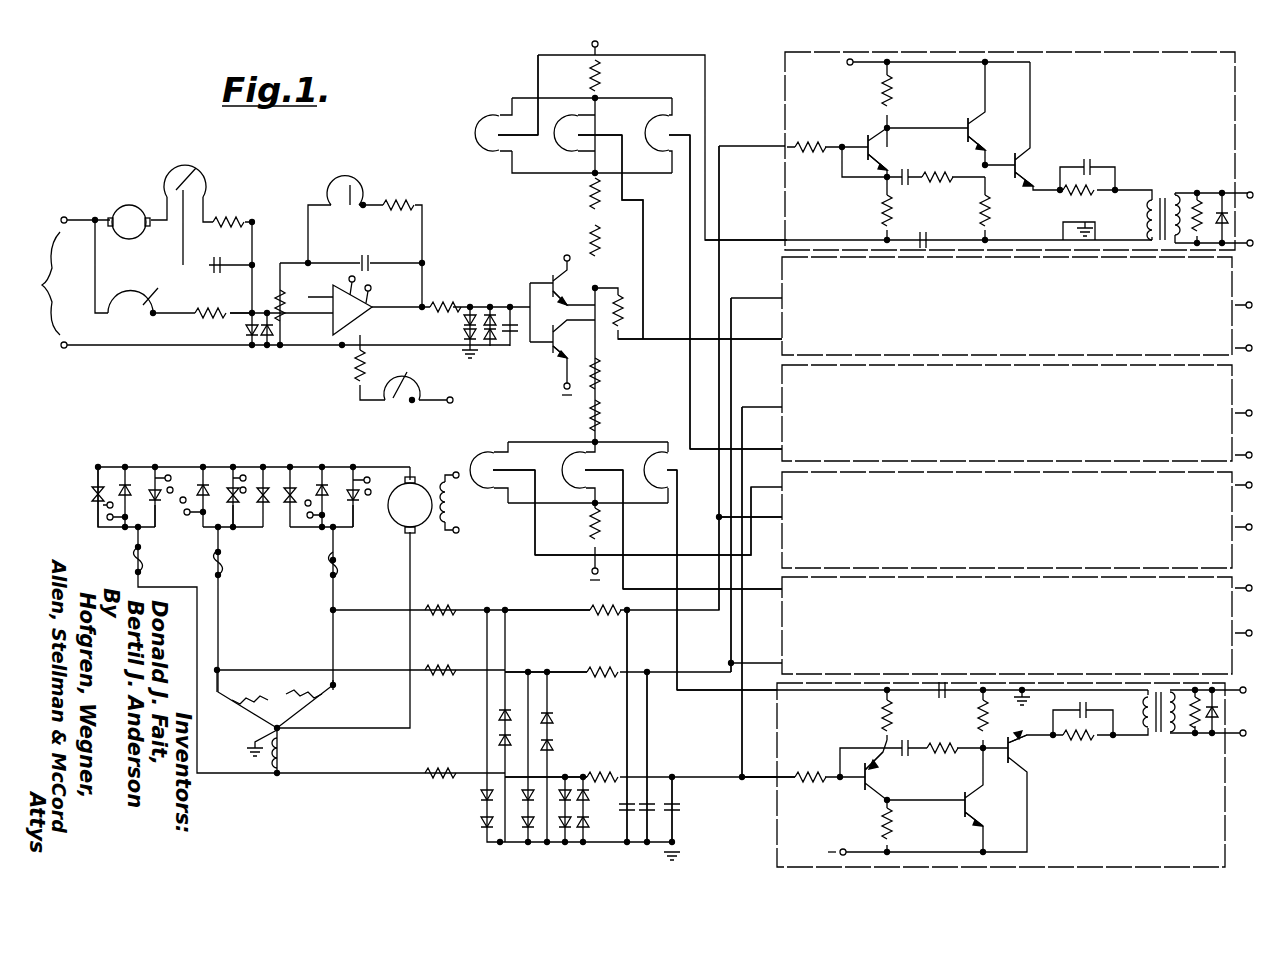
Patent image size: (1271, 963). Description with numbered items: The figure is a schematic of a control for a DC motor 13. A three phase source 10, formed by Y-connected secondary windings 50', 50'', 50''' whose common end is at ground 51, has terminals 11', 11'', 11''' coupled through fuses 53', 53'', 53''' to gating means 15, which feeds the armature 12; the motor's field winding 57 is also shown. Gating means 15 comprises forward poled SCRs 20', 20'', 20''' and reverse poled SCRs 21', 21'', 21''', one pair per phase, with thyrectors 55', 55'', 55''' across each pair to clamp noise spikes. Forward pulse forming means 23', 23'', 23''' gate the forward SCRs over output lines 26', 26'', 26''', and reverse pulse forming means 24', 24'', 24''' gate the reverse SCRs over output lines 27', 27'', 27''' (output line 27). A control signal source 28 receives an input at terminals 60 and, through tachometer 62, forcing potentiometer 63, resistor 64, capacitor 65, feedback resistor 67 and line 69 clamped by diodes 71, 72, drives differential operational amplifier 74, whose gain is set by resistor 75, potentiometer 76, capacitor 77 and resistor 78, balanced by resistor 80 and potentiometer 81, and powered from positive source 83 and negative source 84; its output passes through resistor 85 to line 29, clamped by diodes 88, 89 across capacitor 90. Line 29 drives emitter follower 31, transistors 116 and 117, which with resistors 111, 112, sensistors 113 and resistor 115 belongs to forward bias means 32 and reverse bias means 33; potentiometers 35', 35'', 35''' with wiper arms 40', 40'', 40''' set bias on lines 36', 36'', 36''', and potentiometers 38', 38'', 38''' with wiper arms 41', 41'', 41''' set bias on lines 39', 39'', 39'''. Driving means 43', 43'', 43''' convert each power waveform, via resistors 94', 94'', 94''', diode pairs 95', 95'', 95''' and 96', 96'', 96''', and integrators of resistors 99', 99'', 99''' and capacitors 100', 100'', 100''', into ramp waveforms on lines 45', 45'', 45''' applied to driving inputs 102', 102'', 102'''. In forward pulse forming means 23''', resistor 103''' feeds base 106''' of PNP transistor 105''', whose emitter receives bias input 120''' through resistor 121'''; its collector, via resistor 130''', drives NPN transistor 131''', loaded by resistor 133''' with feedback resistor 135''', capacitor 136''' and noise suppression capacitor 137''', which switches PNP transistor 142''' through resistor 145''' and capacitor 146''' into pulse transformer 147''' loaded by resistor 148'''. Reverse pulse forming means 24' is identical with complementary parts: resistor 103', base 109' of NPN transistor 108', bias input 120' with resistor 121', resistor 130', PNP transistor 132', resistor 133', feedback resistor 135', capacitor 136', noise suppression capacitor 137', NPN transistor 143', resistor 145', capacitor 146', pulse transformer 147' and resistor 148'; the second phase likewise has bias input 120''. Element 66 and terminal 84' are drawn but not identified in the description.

The motor 10 is at (281, 694).
The motor winding terminal 11' is at (353, 689).
The motor winding terminal 11'' is at (247, 666).
The motor winding terminal 11''' is at (289, 789).
The pilot motor 12 is at (419, 514).
The pilot motor circuit 13 is at (431, 462).
The switching circuit 15 is at (251, 428).
The diode 20' is at (329, 471).
The diode 20'' is at (198, 459).
The diode 20''' is at (117, 467).
The diode 21' is at (362, 528).
The diode 21'' is at (247, 530).
The diode 21''' is at (163, 520).
The control circuit 23' is at (1137, 525).
The control circuit 23'' is at (1113, 632).
The control circuit 23''' is at (1122, 810).
The control circuit 24' is at (1140, 110).
The control circuit 24'' is at (1140, 309).
The control circuit 24''' is at (1137, 410).
The contacts 26' is at (765, 519).
The contacts 26'' is at (712, 566).
The contacts 26''' is at (651, 631).
The output terminals 27 is at (1254, 219).
The contacts 27' is at (366, 473).
The contacts 27'' is at (738, 402).
The contacts 27''' is at (698, 455).
The speed control circuit 28 is at (290, 186).
The junction 29 is at (490, 305).
The transistor pair 31 is at (551, 326).
The relay group 32 is at (577, 556).
The relay group 33 is at (651, 81).
The relay coil 35' is at (483, 456).
The relay coil 35'' is at (562, 456).
The relay coil 35''' is at (656, 454).
The relay contact lead 36' is at (512, 512).
The relay contact lead 36'' is at (645, 529).
The relay contact lead 36''' is at (657, 580).
The relay coil 38' is at (482, 123).
The relay coil 38'' is at (564, 125).
The relay coil 38''' is at (667, 116).
The relay contact lead 39' is at (518, 95).
The relay contact lead 39'' is at (623, 220).
The relay contact lead 39''' is at (667, 292).
The relay contact arm 40' is at (490, 460).
The relay contact arm 40'' is at (576, 463).
The relay contact arm 40''' is at (643, 463).
The relay contact arm 41' is at (491, 143).
The relay contact arm 41'' is at (574, 151).
The relay contact arm 41''' is at (682, 129).
The conductor 43' is at (547, 600).
The conductor 43'' is at (546, 662).
The conductor 43''' is at (546, 769).
The conductor 45' is at (643, 726).
The conductor 45'' is at (649, 746).
The conductor 45''' is at (691, 799).
The motor winding 50' is at (316, 718).
The motor winding 50'' is at (235, 718).
The motor winding 50''' is at (303, 753).
The ground 51 is at (462, 353).
The switch 53' is at (310, 570).
The switch 53'' is at (236, 568).
The switch 53''' is at (158, 565).
The bidirectional diode 55' is at (293, 476).
The bidirectional diode 55'' is at (274, 466).
The bidirectional diode 55''' is at (74, 490).
The pickup coil 57 is at (450, 508).
The input terminals 60 is at (51, 282).
The motor 62 is at (126, 206).
The inductor 63 is at (182, 165).
The resistor 64 is at (228, 213).
The capacitor 65 is at (215, 258).
The inductor 66 is at (124, 292).
The resistor 67 is at (210, 304).
The conductor 69 is at (240, 322).
The diode 71 is at (248, 338).
The diode 72 is at (267, 345).
The amplifier 74 is at (352, 310).
The resistor 75 is at (392, 204).
The inductor 76 is at (358, 188).
The capacitor 77 is at (365, 252).
The resistor 78 is at (273, 284).
The resistor 80 is at (352, 375).
The inductor 81 is at (424, 387).
The positive supply terminal 83 is at (848, 67).
The negative supply terminal 84 is at (605, 568).
The negative supply terminal 84' is at (550, 389).
The resistor 85 is at (455, 305).
The diodes 88 is at (462, 325).
The diodes 89 is at (490, 348).
The capacitor 90 is at (510, 338).
The resistor 94' is at (443, 602).
The resistor 94'' is at (442, 661).
The resistor 94''' is at (424, 762).
The diodes 95' is at (460, 808).
The diodes 95'' is at (508, 830).
The diodes 95''' is at (549, 830).
The diodes 96' is at (473, 727).
The diodes 96'' is at (564, 727).
The diodes 96''' is at (593, 830).
The resistor 99' is at (596, 601).
The resistor 99'' is at (602, 664).
The resistor 99''' is at (600, 754).
The capacitor 100' is at (652, 776).
The capacitor 100'' is at (684, 821).
The capacitor 100''' is at (698, 812).
The conductor 102' is at (776, 366).
The conductor 102'' is at (784, 478).
The conductor 102''' is at (792, 584).
The resistor 103' is at (808, 128).
The resistor 103''' is at (816, 769).
The transistor 105''' is at (897, 771).
The conductor 106''' is at (801, 795).
The transistor 108' is at (896, 150).
The junction 109' is at (826, 137).
The resistor 111 is at (588, 78).
The resistor 112 is at (588, 203).
The resistor 113 is at (600, 238).
The resistor 115 is at (630, 292).
The transistor 116 is at (573, 292).
The transistor 117 is at (577, 343).
The conductor 120' is at (684, 383).
The conductor 120'' is at (728, 467).
The conductor 120''' is at (759, 574).
The resistor 121' is at (853, 209).
The resistor 121''' is at (857, 710).
The resistor 130' is at (913, 95).
The resistor 130''' is at (934, 831).
The transistor 131''' is at (951, 809).
The transistor 132' is at (998, 127).
The resistor 133' is at (1007, 151).
The resistor 133''' is at (953, 719).
The resistor 135' is at (921, 196).
The resistor 135''' is at (936, 770).
The capacitor 136' is at (920, 171).
The capacitor 136''' is at (933, 742).
The capacitor 137' is at (938, 256).
The capacitor 137''' is at (965, 675).
The transistor 142''' is at (1042, 764).
The transistor 143' is at (1046, 161).
The resistor 145' is at (1092, 204).
The resistor 145''' is at (1083, 755).
The capacitor 146' is at (1109, 156).
The capacitor 146''' is at (1099, 689).
The transformer 147' is at (1174, 199).
The transformer 147''' is at (1170, 727).
The diode 148' is at (1210, 204).
The diode 148''' is at (1183, 698).